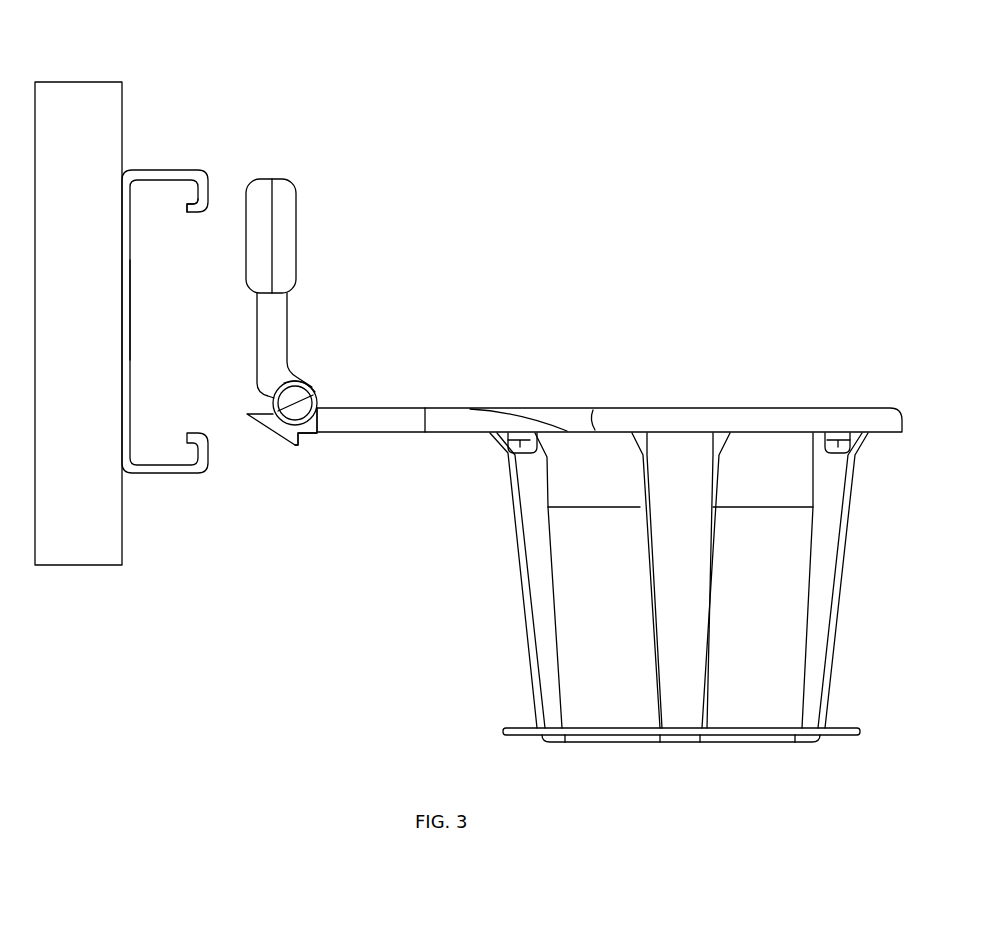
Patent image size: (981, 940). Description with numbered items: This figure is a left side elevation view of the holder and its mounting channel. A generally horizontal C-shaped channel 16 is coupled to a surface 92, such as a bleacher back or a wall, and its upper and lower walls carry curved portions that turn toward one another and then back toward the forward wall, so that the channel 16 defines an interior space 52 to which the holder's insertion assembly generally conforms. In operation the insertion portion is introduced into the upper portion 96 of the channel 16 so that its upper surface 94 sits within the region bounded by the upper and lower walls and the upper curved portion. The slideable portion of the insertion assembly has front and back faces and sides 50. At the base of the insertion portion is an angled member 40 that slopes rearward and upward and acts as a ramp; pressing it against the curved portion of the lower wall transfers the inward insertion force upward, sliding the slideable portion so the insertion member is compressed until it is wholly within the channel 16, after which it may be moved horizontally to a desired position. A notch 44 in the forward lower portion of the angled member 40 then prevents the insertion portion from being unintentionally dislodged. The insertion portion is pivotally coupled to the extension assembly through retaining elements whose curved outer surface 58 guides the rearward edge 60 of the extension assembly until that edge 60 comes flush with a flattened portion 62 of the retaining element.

The surface 92 is at (90, 100).
The channel portion 16 is at (172, 160).
The upper portion of the channel 96 is at (160, 198).
The interior space 52 is at (157, 312).
The sides 50 is at (283, 208).
The upper surface 94 is at (275, 180).
The curved outer surface 58 is at (315, 390).
The rearward edge 60 is at (318, 412).
The flattened portion 62 is at (318, 433).
The notch 44 is at (303, 440).
The angled member 40 is at (275, 428).